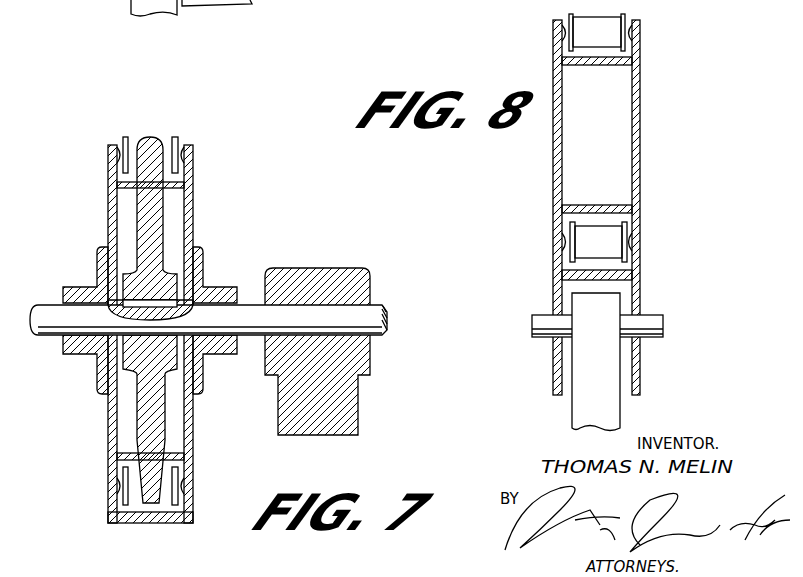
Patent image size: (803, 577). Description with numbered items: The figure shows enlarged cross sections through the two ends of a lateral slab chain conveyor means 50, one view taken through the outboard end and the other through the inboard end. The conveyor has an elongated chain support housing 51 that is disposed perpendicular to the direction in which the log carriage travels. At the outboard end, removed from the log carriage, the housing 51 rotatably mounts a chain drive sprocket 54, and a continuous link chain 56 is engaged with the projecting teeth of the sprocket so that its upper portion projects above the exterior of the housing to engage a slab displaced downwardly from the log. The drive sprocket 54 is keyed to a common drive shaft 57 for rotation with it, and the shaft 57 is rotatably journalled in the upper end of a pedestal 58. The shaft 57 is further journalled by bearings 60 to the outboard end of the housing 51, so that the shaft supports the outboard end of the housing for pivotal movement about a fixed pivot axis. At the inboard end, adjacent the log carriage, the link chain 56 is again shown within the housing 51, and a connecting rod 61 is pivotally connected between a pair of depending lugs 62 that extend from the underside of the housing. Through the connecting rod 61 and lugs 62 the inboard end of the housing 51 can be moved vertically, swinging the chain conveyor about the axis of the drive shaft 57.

In FIG. 8, the chain conveyor means 50 is at (641, 142).
In FIG. 7, the chain support housing 51 is at (195, 420).
In FIG. 7, the chain drive sprocket 54 is at (160, 212).
In FIG. 7, the link chain 56 is at (167, 137).
In FIG. 8, the link chain 56 is at (614, 38).
In FIG. 7, the drive shaft 57 is at (385, 313).
In FIG. 7, the pedestal 58 is at (340, 406).
In FIG. 7, the bearings 60 is at (90, 286).
In FIG. 8, the connecting rod 61 is at (605, 417).
In FIG. 8, the depending lugs 62 is at (553, 358).